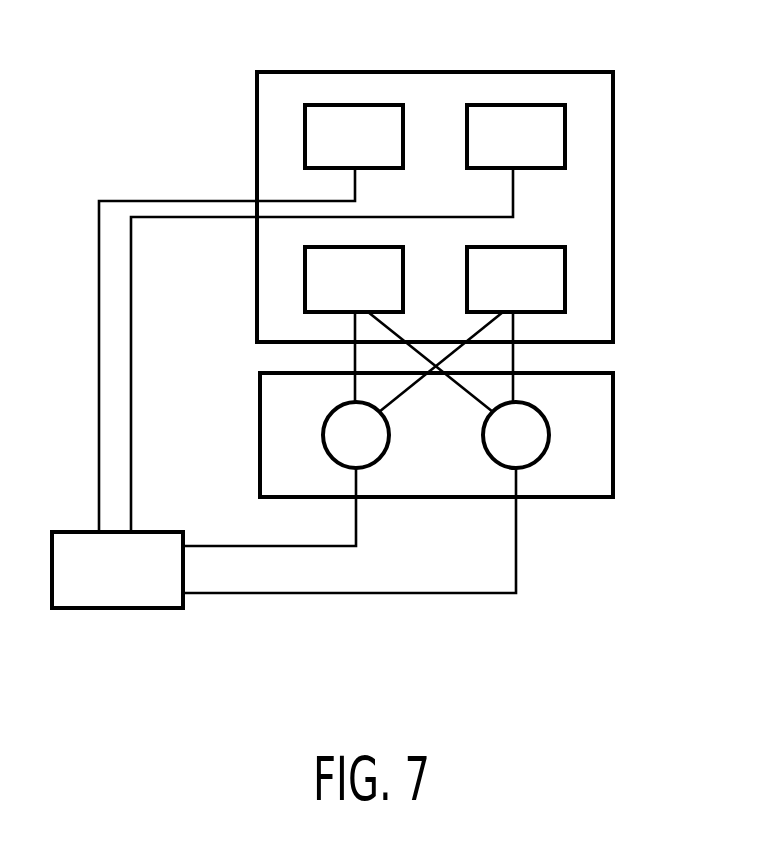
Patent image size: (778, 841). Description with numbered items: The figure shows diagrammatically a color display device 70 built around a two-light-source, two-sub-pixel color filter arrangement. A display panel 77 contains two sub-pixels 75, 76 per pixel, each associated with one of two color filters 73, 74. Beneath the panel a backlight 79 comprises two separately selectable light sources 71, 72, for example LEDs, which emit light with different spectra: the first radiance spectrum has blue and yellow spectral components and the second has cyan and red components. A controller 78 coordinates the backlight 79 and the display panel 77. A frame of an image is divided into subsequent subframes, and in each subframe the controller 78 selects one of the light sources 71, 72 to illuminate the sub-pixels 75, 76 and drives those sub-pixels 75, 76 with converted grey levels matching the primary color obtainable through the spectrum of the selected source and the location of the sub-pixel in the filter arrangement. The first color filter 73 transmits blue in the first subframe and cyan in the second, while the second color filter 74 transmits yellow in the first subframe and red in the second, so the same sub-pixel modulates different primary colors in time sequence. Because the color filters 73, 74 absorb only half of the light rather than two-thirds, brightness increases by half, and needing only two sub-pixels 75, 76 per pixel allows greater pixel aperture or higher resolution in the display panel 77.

The color display device 70 is at (213, 660).
The first light source 71 is at (382, 458).
The second light source 72 is at (542, 458).
The first color filter 73 is at (305, 284).
The second color filter 74 is at (565, 284).
The first sub-pixel 75 is at (337, 105).
The second sub-pixel 76 is at (500, 105).
The display panel 77 is at (613, 173).
The controller 78 is at (85, 608).
The backlight 79 is at (613, 407).